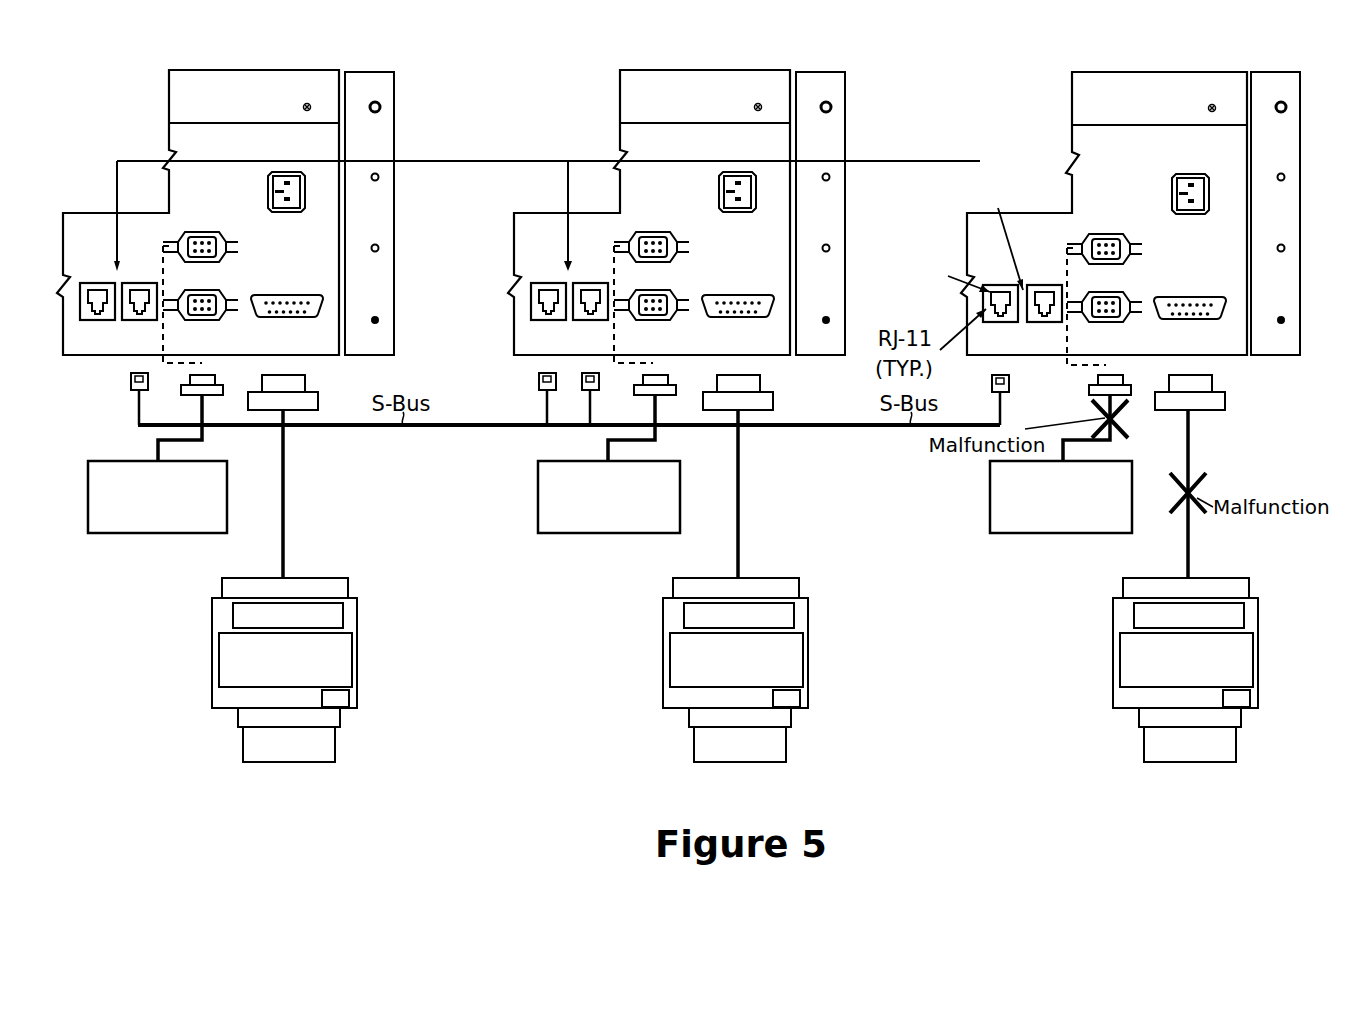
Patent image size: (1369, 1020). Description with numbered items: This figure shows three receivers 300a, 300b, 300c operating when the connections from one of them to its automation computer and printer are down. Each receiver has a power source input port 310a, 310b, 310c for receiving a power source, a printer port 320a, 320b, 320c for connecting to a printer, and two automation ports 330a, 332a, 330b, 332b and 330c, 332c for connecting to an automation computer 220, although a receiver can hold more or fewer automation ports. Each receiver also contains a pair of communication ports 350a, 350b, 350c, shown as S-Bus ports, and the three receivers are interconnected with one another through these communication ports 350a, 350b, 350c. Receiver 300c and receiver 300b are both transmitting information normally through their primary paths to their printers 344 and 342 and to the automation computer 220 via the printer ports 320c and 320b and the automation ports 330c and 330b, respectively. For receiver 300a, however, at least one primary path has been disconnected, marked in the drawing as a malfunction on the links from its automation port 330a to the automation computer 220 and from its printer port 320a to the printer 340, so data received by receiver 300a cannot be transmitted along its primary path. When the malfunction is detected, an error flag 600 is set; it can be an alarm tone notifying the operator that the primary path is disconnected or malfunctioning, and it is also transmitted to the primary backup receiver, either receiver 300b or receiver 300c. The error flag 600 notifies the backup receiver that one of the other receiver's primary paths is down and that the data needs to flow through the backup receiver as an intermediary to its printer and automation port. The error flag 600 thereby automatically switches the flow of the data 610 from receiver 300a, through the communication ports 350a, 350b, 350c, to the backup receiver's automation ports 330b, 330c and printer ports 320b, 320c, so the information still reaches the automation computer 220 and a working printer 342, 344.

The receiver 300a is at (1238, 70).
The receiver 300b is at (783, 70).
The receiver 300c is at (332, 70).
The power source input port 310a is at (1192, 216).
The power source input port 310b is at (739, 214).
The power source input port 310c is at (288, 214).
The printer port 320a is at (1193, 321).
The printer port 320b is at (741, 319).
The printer port 320c is at (290, 319).
The automation port 330a is at (1106, 232).
The automation port 330b is at (653, 230).
The automation port 330c is at (202, 230).
The automation port 332a is at (1106, 323).
The automation port 332b is at (653, 321).
The automation port 332c is at (202, 321).
The communication port 350a is at (1045, 322).
The communication port 350b is at (551, 320).
The communication port 350c is at (100, 320).
The automation computer 220 is at (141, 535).
The printer 340 is at (1231, 580).
The printer 342 is at (781, 580).
The printer 344 is at (330, 580).
The error flag 600 is at (1019, 130).
The data 610 is at (886, 266).